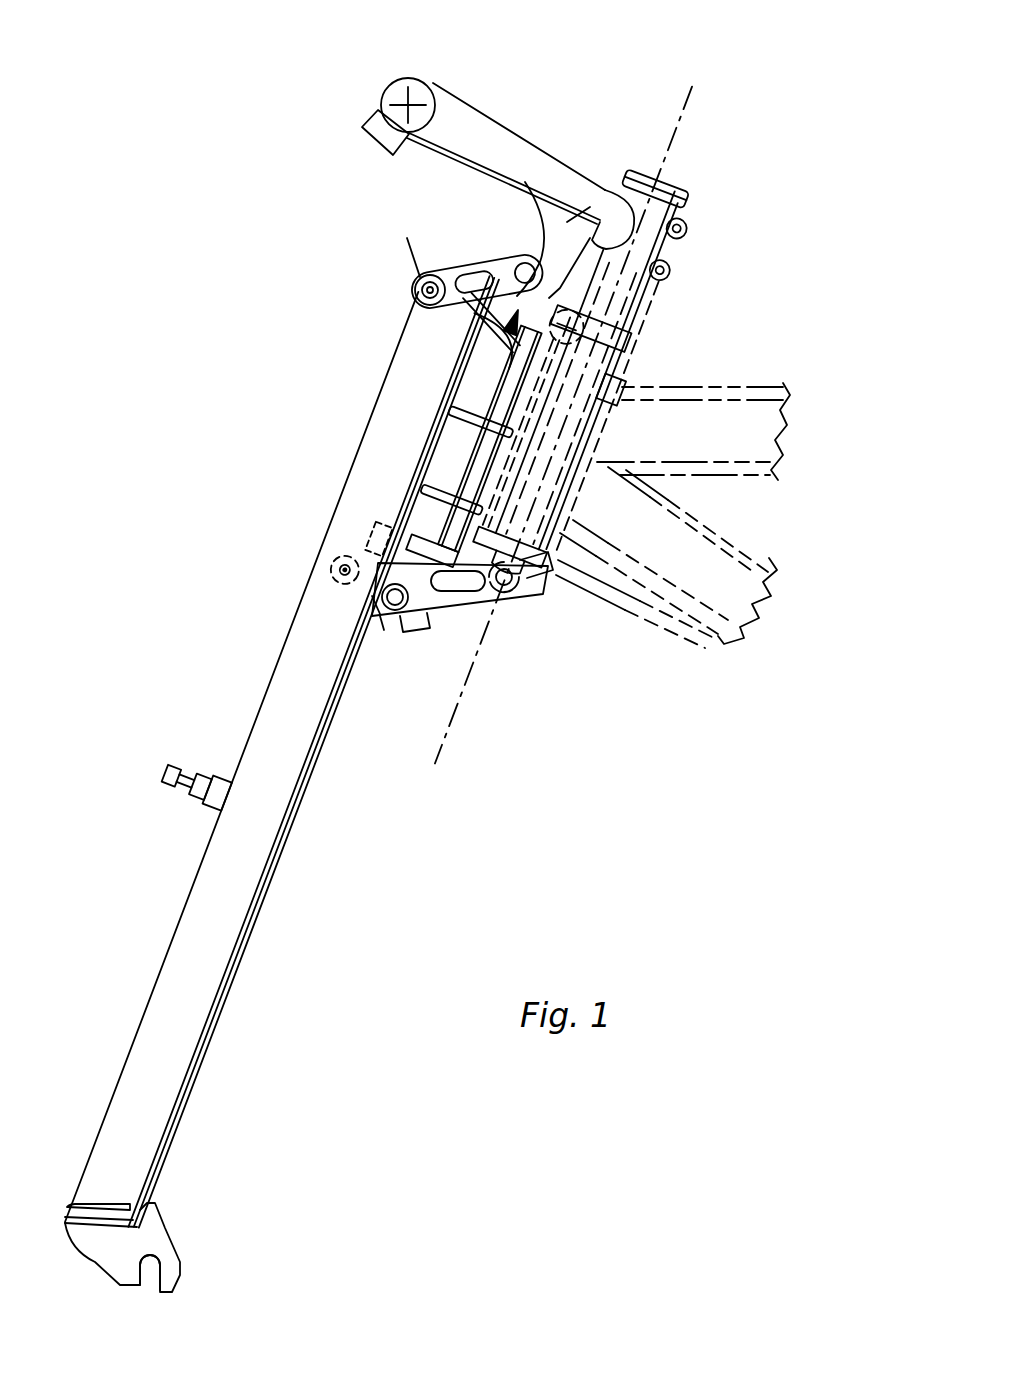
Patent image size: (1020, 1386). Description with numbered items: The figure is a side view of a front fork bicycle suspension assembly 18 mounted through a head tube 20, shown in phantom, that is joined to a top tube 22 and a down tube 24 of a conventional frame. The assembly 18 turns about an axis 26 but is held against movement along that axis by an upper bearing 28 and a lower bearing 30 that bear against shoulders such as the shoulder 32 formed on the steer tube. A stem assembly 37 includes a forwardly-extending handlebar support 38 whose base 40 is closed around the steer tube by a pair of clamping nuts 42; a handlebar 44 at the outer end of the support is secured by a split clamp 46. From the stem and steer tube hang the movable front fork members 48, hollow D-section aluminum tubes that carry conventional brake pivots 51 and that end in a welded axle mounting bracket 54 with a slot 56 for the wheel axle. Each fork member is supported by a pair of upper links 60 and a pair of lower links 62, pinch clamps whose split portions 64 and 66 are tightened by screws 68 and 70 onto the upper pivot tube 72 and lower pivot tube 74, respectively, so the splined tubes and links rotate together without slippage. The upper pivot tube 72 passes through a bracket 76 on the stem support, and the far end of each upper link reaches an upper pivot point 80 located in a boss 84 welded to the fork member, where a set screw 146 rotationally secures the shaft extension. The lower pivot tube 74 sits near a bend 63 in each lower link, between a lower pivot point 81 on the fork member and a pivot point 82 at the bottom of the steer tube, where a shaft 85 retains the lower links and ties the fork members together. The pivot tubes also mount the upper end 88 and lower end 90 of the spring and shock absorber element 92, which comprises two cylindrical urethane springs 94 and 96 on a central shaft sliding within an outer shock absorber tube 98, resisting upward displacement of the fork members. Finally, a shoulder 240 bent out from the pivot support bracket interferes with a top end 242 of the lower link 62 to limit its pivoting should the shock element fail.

The front fork bicycle suspension assembly 18 is at (720, 289).
The head tube 20 is at (632, 376).
The top tube 22 is at (775, 438).
The down tube 24 is at (753, 600).
The axis 26 is at (694, 98).
The upper bearing 28 is at (648, 347).
The lower bearing 30 is at (647, 622).
The shoulder 32 is at (640, 334).
The stem assembly 37 is at (644, 160).
The handlebar support 38 is at (567, 134).
The base 40 is at (672, 188).
The clamping nuts 42 is at (672, 270).
The handlebar 44 is at (385, 71).
The split clamp 46 is at (359, 134).
The front fork members 48 is at (237, 907).
The brake pivots 51 is at (170, 780).
The axle mounting bracket 54 is at (157, 1243).
The slot 56 is at (147, 1298).
The upper links 60 is at (460, 262).
The lower links 62 is at (563, 425).
The bend 63 is at (397, 635).
The split portion 64 is at (512, 268).
The split portion 66 is at (445, 596).
The screw 68 is at (480, 345).
The screw 70 is at (420, 622).
The upper pivot tube 72 is at (524, 180).
The lower pivot tube 74 is at (377, 618).
The bracket 76 is at (592, 205).
The upper pivot point 80 is at (398, 279).
The lower pivot point 81 is at (347, 580).
The lower pivot point 82 is at (514, 596).
The boss 84 is at (418, 303).
The shaft 85 is at (558, 603).
The upper end 88 is at (490, 395).
The lower end 90 is at (470, 598).
The spring and shock absorber element 92 is at (417, 469).
The cylindrical urethane spring 94 is at (440, 530).
The cylindrical urethane spring 96 is at (447, 453).
The outer shock absorber tube 98 is at (485, 315).
The set screw 146 is at (422, 276).
The shoulder 240 is at (373, 538).
The top end 242 is at (312, 562).